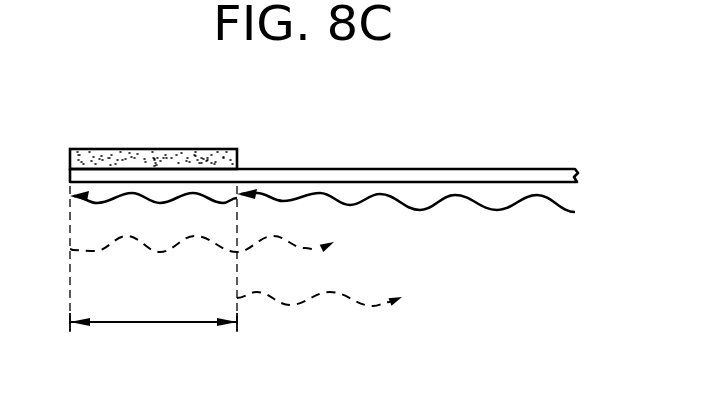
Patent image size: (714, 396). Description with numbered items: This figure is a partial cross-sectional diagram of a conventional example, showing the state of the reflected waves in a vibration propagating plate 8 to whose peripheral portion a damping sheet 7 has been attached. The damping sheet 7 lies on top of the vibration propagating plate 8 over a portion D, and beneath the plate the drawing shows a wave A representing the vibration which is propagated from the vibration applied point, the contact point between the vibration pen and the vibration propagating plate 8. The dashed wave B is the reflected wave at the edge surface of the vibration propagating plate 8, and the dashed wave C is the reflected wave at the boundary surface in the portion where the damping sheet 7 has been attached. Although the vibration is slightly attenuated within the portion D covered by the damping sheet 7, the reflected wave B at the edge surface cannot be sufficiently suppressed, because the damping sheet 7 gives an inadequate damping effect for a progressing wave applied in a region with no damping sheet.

The damping sheet 7 is at (237, 151).
The vibration propagating plate 8 is at (552, 168).
The propagated vibration wave A is at (457, 195).
The reflected wave at edge surface B is at (215, 244).
The reflected wave at boundary surface C is at (334, 299).
The damping sheet attached portion D is at (163, 322).